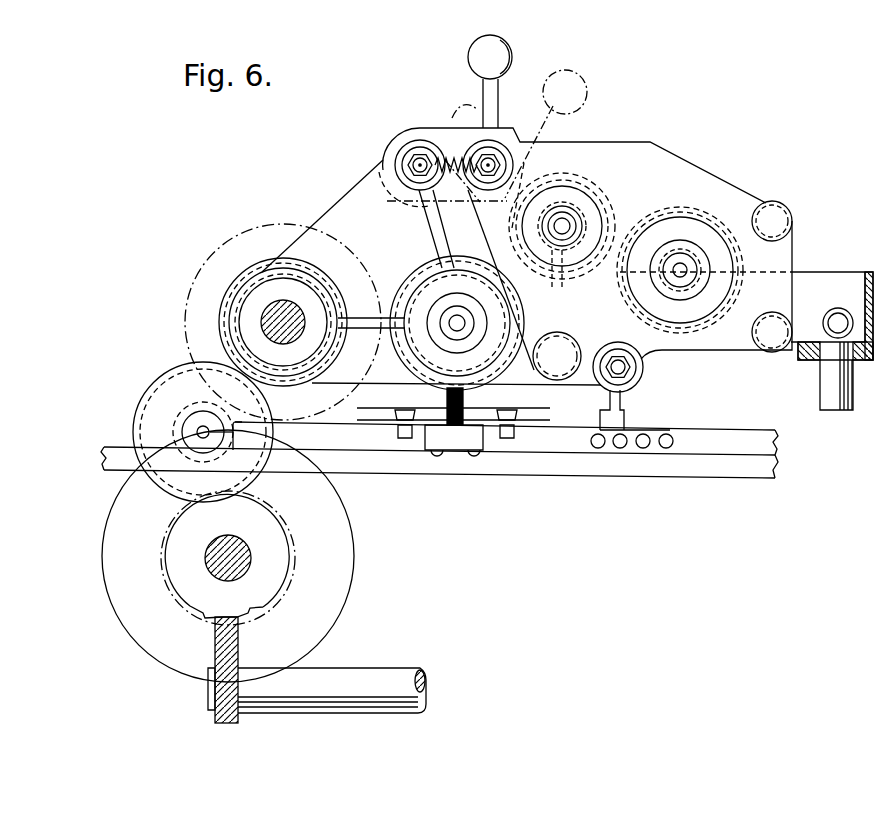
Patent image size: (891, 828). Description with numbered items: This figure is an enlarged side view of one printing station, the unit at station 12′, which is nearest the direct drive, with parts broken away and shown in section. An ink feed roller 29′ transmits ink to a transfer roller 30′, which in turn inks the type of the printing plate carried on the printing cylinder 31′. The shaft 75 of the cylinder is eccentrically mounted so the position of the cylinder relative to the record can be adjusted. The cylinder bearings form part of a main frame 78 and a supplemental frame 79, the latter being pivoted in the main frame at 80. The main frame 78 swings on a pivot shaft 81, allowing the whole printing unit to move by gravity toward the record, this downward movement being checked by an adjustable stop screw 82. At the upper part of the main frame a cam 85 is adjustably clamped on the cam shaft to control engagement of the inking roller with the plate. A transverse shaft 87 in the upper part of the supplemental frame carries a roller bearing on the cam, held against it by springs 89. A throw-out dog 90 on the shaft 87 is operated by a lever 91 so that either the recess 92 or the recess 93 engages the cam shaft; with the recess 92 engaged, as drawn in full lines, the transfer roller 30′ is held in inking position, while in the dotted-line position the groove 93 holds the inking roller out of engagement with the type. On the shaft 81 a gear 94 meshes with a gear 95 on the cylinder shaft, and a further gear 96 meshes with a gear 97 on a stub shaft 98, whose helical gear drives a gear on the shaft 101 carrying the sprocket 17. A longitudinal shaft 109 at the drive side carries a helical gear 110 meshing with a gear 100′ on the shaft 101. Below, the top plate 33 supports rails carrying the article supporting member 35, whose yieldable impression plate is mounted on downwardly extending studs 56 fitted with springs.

The printing unit 12′ is at (614, 56).
The sprocket 17 is at (355, 520).
The ink feed roller 29′ is at (673, 208).
The transfer roller 30′ is at (588, 166).
The printing cylinder 31′ is at (415, 266).
The top plate 33 is at (732, 472).
The article supporting member 35 is at (532, 427).
The stud 56 is at (402, 440).
The shaft of the cylinder 75 is at (318, 218).
The main frame 78 is at (347, 193).
The supplemental frame 79 is at (638, 328).
The pivot of the supplemental frame 80 is at (560, 372).
The pivot shaft 81 is at (275, 312).
The adjustable stop screw 82 is at (455, 412).
The cam 85 is at (397, 140).
The transverse shaft 87 is at (497, 160).
The spring 89 is at (437, 132).
The throw-out dog 90 is at (466, 142).
The lever 91 is at (503, 42).
The recess 92 is at (452, 116).
The recess 93 is at (400, 207).
The gear 94 is at (208, 254).
The gear 95 is at (392, 266).
The gear 96 is at (218, 310).
The gear 97 is at (142, 397).
The stub shaft 98 is at (201, 430).
The gear 100′ is at (242, 620).
The shaft 101 is at (251, 558).
The longitudinal shaft 109 is at (405, 668).
The helical gear 110 is at (238, 647).